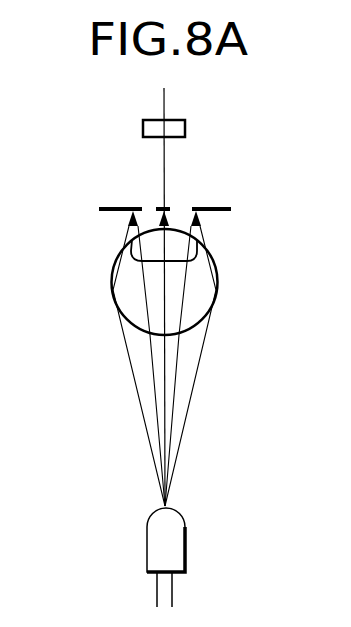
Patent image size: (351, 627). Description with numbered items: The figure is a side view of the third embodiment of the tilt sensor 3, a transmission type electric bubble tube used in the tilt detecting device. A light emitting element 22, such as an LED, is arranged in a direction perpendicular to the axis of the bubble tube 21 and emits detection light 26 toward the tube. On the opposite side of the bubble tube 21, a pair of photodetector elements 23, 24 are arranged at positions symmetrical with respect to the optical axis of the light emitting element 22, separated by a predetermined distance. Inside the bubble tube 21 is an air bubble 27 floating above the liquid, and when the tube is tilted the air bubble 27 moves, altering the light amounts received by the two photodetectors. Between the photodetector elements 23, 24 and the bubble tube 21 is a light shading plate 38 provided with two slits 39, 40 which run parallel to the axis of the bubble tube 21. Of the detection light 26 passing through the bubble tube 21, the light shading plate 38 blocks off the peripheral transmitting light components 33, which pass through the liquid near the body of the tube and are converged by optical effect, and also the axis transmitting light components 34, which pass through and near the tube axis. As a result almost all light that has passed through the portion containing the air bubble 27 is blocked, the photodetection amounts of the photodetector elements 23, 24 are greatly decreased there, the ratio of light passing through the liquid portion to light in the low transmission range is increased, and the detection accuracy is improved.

The tilt sensor 3 is at (114, 402).
The bubble tube 21 is at (217, 283).
The light emitting element 22 is at (175, 543).
The photodetector element 23 is at (221, 108).
The photodetector element 24 is at (183, 119).
The detection light 26 is at (197, 390).
The air bubble 27 is at (150, 253).
The peripheral transmitting light components 33 is at (122, 235).
The axis transmitting light components 34 is at (163, 450).
The light shading plate 38 is at (216, 212).
The slit 39 is at (152, 206).
The slit 40 is at (180, 206).